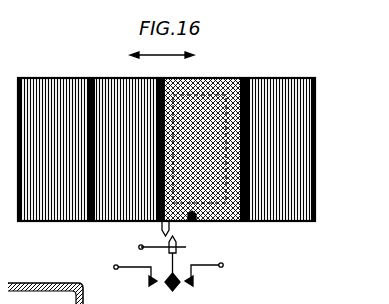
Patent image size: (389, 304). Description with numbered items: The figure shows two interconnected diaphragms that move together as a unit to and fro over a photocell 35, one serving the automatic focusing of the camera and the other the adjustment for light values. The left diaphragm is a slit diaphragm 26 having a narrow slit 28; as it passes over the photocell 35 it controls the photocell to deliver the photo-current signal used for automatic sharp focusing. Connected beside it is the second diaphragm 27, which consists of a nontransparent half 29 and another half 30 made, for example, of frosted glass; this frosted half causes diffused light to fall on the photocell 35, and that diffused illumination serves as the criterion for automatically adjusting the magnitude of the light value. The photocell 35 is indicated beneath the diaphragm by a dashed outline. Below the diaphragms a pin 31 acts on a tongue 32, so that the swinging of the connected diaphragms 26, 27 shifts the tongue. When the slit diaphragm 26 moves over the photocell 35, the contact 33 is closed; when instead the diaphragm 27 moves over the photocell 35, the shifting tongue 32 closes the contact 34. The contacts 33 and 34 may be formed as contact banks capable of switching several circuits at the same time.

The slit diaphragm 26 is at (150, 67).
The diaphragm 27 is at (300, 67).
The narrow slit 28 is at (83, 193).
The nontransparent half 29 is at (284, 213).
The other half 30 is at (184, 214).
The pin 31 is at (154, 218).
The tongue 32 is at (164, 259).
The contact 33 is at (135, 279).
The contact 34 is at (204, 277).
The photocell 35 is at (222, 214).